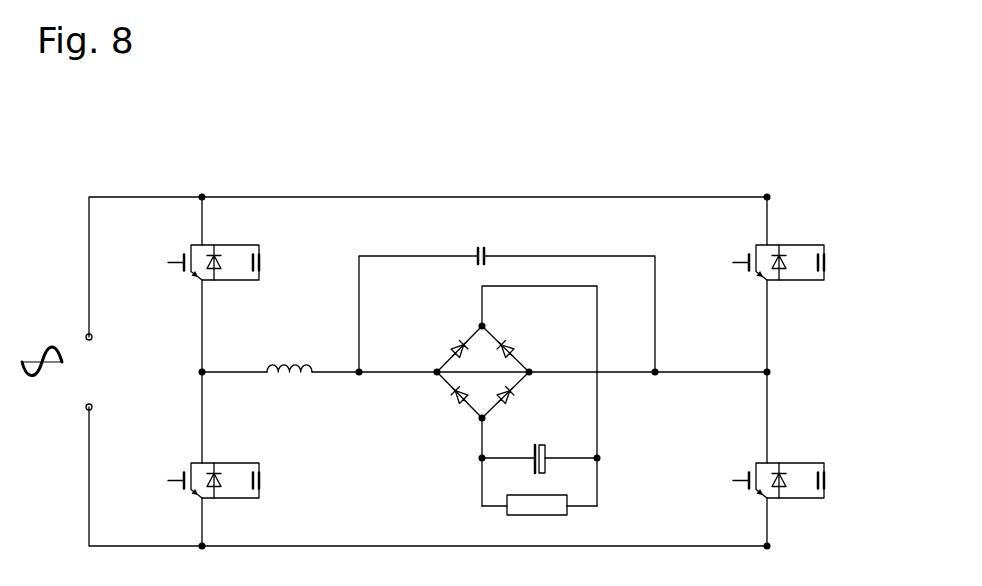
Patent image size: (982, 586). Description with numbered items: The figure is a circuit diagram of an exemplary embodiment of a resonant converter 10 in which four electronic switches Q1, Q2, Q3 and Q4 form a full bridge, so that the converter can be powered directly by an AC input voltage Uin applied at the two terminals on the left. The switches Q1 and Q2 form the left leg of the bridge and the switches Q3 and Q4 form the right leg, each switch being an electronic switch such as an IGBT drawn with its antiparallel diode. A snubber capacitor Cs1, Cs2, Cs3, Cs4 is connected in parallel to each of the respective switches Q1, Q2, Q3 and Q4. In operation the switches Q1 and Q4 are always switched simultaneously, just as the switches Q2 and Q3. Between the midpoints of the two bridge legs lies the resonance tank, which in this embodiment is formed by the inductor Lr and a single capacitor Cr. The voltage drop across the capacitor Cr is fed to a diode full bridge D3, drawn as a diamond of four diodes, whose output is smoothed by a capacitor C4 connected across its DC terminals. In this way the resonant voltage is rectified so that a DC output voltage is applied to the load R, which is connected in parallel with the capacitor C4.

The converter 10 is at (458, 167).
The AC input voltage Uin is at (68, 372).
The switch Q1 is at (192, 268).
The switch Q2 is at (192, 484).
The switch Q3 is at (758, 268).
The switch Q4 is at (758, 484).
The snubber capacitor Cs1 is at (283, 268).
The snubber capacitor Cs2 is at (283, 484).
The snubber capacitor Cs3 is at (849, 268).
The snubber capacitor Cs4 is at (849, 484).
The inductor Lr is at (289, 394).
The capacitor Cr is at (507, 293).
The diode full bridge D3 is at (483, 372).
The capacitor C4 is at (540, 396).
The load R is at (539, 522).